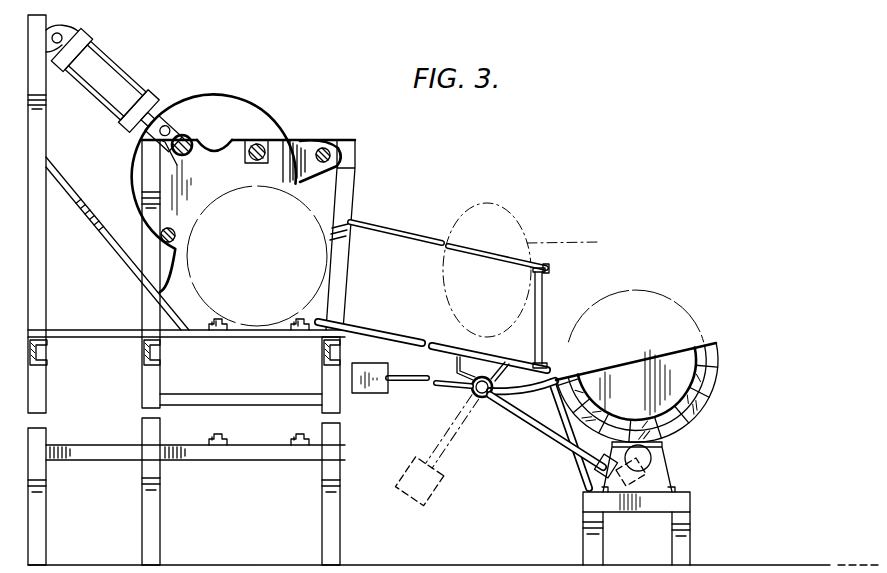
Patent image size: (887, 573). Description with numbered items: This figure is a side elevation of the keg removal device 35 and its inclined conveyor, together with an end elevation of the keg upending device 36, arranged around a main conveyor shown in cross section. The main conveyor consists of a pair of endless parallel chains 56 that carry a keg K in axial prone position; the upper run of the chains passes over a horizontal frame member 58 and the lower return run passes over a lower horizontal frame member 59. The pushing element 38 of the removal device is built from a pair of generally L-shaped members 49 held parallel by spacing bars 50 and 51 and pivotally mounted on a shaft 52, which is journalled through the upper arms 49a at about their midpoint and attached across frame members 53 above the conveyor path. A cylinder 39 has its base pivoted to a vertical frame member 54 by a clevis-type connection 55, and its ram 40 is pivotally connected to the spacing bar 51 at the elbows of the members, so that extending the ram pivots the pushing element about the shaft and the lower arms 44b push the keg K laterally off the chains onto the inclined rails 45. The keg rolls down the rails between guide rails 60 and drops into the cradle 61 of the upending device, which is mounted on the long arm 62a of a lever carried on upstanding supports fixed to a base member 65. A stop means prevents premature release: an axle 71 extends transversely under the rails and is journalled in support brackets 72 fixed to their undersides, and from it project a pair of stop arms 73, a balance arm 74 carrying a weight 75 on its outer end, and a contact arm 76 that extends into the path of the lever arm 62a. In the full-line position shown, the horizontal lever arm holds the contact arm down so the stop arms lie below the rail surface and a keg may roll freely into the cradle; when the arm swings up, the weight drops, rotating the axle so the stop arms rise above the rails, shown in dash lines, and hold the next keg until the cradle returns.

The keg removal device 35 is at (200, 128).
The keg upending device 36 is at (710, 424).
The pushing element 38 is at (214, 140).
The cylinder 39 is at (122, 74).
The ram 40 is at (172, 108).
The roll 44b is at (163, 270).
The inclined rails 45 is at (375, 329).
The generally L-shaped members 49 is at (213, 153).
The upper arms 49a is at (292, 138).
The spacing bar 50 is at (330, 143).
The spacing bar 51 is at (184, 134).
The shaft 52 is at (260, 142).
The frame members 53 is at (312, 138).
The vertical frame member 54 is at (43, 148).
The clevis-type connection 55 is at (63, 32).
The endless parallel chains 56 is at (292, 438).
The horizontal frame member 58 is at (195, 338).
The lower horizontal frame member 59 is at (195, 406).
The guide rails 60 is at (416, 238).
The cradle 61 is at (721, 386).
The long arm 62a is at (651, 458).
The base member 65 is at (685, 500).
The axle 71 is at (475, 392).
The support brackets 72 is at (457, 367).
The stop arms 73 is at (546, 331).
The balance arm 74 is at (413, 382).
The weight 75 is at (372, 391).
The contact arm 76 is at (557, 436).
The keg K is at (624, 300).